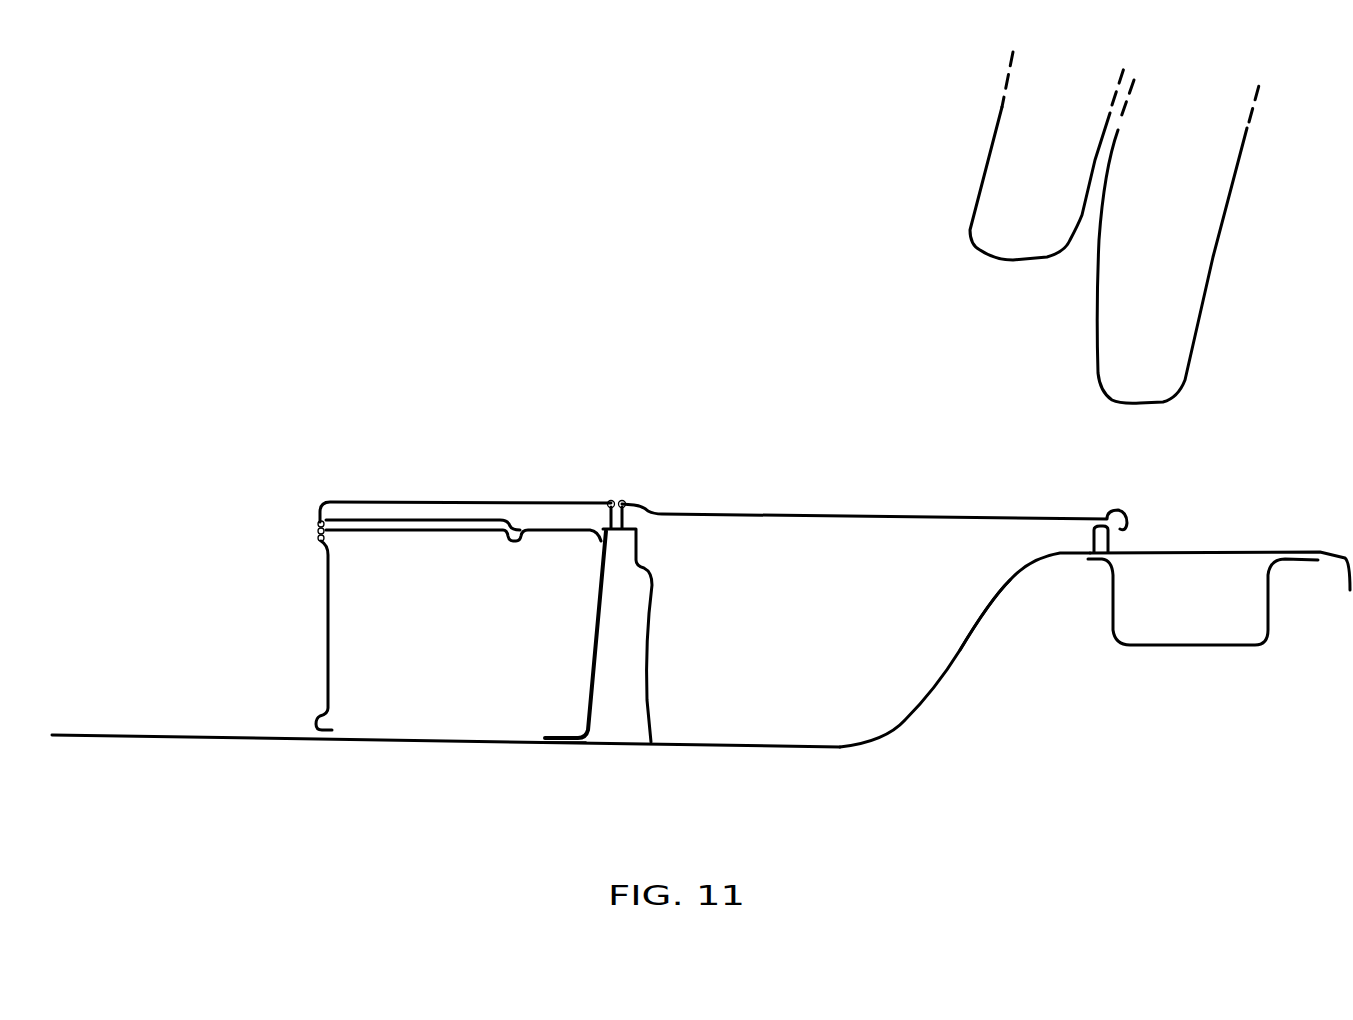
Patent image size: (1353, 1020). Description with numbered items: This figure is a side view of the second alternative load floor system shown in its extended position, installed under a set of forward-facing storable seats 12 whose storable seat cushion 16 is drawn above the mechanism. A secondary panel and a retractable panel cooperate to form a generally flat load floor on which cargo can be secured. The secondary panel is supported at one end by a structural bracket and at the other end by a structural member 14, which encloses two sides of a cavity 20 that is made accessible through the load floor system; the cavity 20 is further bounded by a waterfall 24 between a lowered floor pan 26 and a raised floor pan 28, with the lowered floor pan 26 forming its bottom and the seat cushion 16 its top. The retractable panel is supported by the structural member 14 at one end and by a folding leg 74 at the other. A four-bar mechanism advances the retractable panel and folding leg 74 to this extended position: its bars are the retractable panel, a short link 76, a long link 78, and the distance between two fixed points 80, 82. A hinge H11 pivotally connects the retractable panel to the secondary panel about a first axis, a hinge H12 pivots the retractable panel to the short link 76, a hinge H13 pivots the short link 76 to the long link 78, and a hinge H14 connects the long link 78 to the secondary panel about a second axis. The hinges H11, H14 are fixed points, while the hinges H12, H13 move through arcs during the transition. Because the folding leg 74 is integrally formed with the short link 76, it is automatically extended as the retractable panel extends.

The storable seats 12 is at (1190, 258).
The structural member 14 is at (615, 744).
The storable seat cushion 16 is at (1011, 188).
The cavity 20 is at (950, 632).
The waterfall 24 is at (978, 645).
The lowered floor pan 26 is at (838, 748).
The raised floor pan 28 is at (1230, 552).
The folding leg 74 is at (327, 628).
The short link 76 is at (316, 535).
The long link 78 is at (418, 532).
The fixed point 80 is at (625, 507).
The fixed point 82 is at (607, 502).
The hinge H11 is at (624, 500).
The hinge H12 is at (316, 524).
The hinge H13 is at (316, 542).
The hinge H14 is at (610, 500).